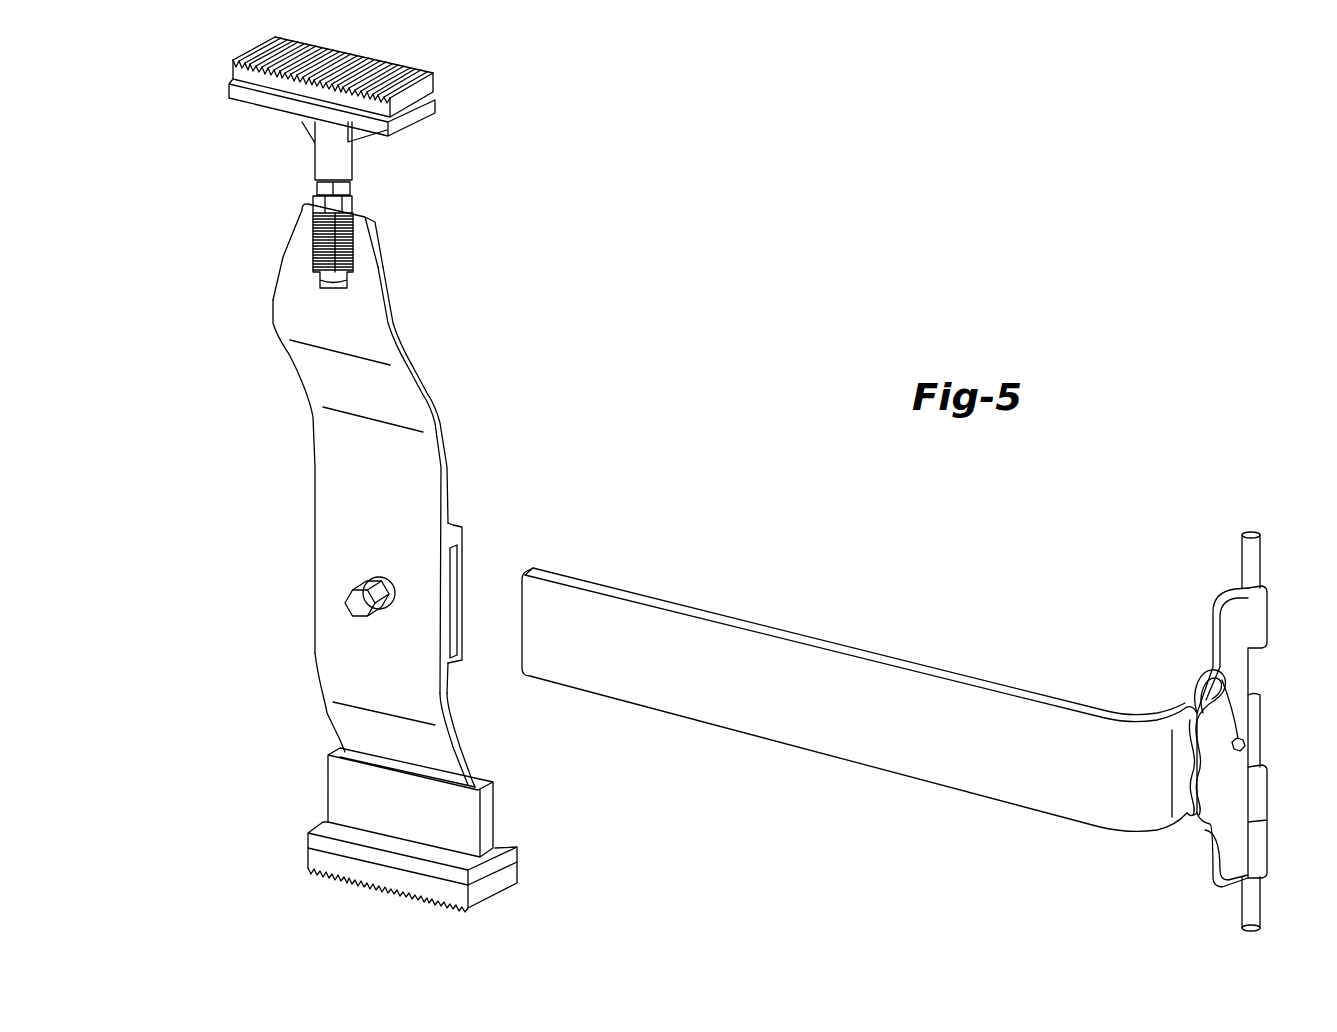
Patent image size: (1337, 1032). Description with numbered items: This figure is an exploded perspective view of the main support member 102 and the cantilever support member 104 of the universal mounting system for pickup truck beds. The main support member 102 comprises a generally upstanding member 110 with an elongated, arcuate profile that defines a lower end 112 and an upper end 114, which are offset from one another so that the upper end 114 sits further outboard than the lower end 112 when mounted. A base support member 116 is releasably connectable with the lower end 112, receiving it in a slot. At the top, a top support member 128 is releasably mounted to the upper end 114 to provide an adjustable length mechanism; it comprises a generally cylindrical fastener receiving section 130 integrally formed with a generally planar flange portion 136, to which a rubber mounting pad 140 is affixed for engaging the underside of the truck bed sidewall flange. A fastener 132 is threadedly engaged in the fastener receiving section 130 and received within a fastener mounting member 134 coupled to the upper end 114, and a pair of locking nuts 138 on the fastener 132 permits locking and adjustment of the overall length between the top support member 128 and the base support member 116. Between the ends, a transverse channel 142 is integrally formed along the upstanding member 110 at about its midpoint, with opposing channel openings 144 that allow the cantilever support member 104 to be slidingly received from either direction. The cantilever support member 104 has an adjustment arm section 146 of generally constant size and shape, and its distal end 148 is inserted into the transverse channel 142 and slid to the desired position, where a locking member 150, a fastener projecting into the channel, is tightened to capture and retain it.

The main support member 102 is at (306, 526).
The cantilever support member 104 is at (874, 643).
The generally upstanding member 110 is at (440, 417).
The lower end 112 is at (473, 752).
The upper end 114 is at (383, 223).
The base support member 116 is at (507, 815).
The top support member 128 is at (306, 148).
The fastener receiving section 130 is at (336, 157).
The fastener 132 is at (325, 278).
The fastener mounting member 134 is at (353, 263).
The flange portion 136 is at (440, 99).
The locking nuts 138 is at (343, 204).
The mounting pad 140 is at (437, 85).
The transverse channel 142 is at (462, 561).
The channel opening 144 is at (453, 647).
The adjustment arm section 146 is at (800, 632).
The distal end 148 is at (552, 570).
The locking member 150 is at (347, 598).